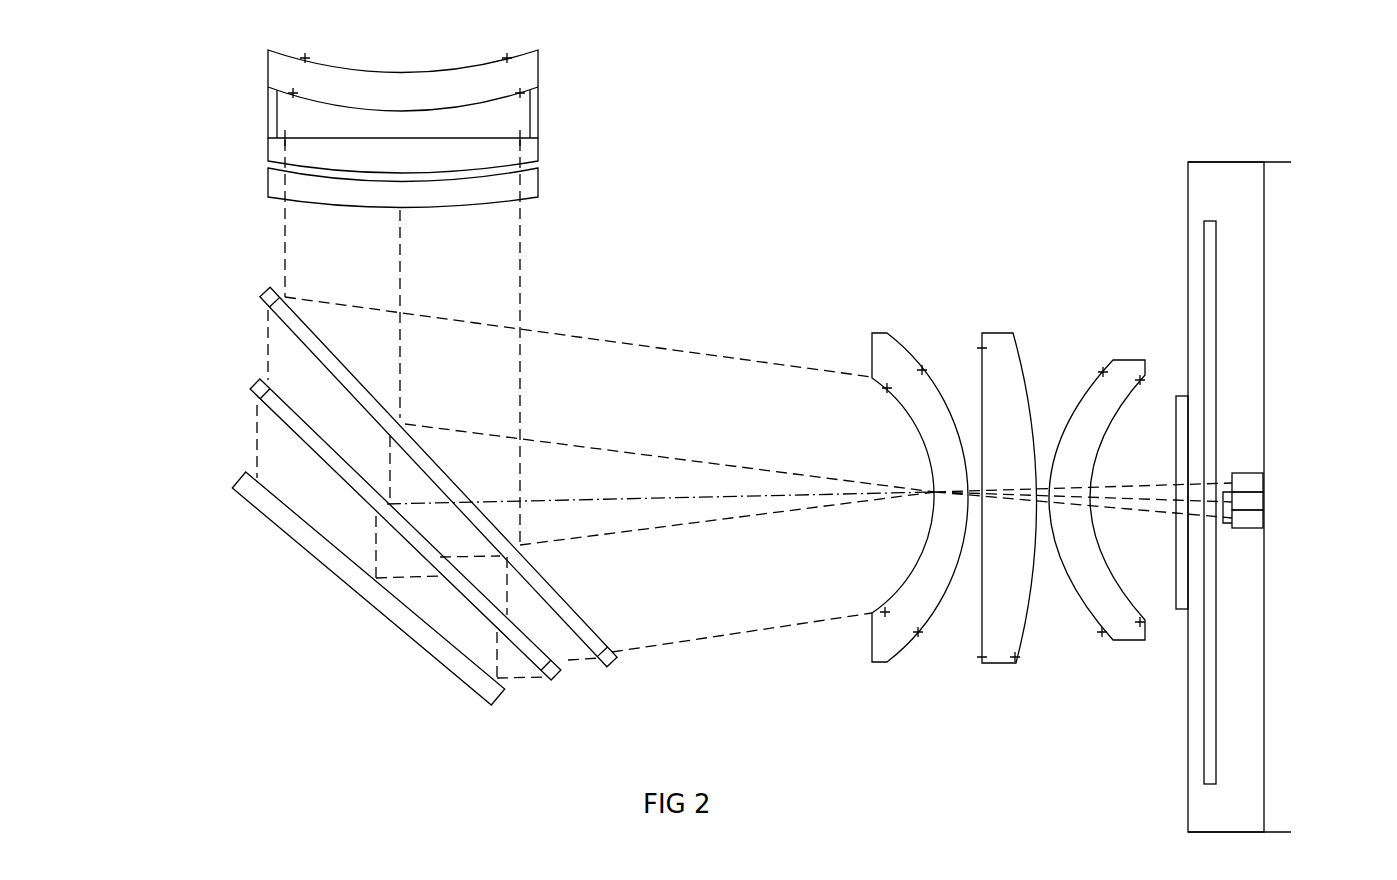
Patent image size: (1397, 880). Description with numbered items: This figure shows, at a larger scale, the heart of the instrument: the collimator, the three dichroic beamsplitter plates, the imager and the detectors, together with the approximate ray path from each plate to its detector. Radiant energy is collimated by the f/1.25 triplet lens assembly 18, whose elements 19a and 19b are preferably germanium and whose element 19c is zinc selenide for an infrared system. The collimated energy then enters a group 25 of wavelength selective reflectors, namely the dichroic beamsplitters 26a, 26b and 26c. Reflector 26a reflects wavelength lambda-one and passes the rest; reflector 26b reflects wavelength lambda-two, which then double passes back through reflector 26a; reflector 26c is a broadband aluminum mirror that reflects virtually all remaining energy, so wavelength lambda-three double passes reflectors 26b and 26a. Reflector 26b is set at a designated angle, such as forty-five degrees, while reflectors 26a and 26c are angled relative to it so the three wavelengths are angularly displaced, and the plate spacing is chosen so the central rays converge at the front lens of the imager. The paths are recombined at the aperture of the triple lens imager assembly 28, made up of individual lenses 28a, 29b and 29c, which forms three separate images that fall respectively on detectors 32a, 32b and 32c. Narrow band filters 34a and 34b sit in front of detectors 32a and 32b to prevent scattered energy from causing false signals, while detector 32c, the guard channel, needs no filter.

The triplet lens assembly 18 is at (547, 102).
The lens element 19a is at (268, 66).
The lens element 19b is at (268, 147).
The lens element 19c is at (268, 183).
The group of wavelength selective reflectors 25 is at (304, 671).
The wavelength selective reflector 26a is at (261, 303).
The wavelength selective reflector 26b is at (254, 404).
The wavelength selective reflector 26c is at (257, 514).
The imager assembly 28 is at (985, 283).
The first relay lens element 28a is at (898, 653).
The lens component 29b is at (1017, 663).
The lens component 29c is at (1127, 657).
The detector 32a is at (1252, 518).
The detector 32b is at (1252, 502).
The detector 32c is at (1250, 485).
The narrow band filter 34a is at (1225, 523).
The narrow band filter 34b is at (1225, 505).